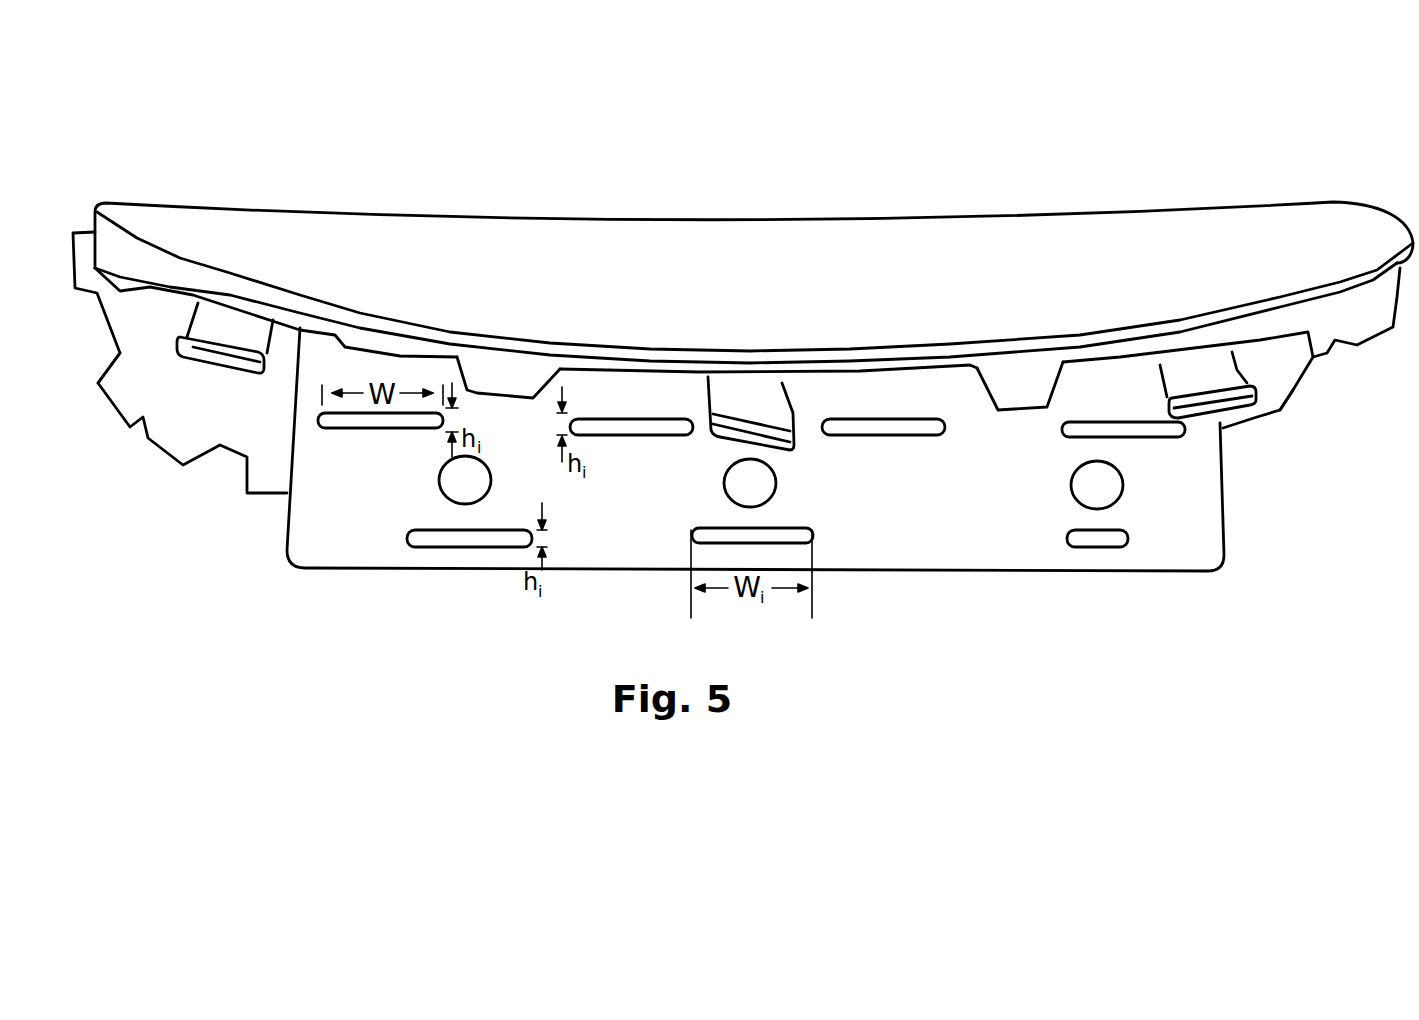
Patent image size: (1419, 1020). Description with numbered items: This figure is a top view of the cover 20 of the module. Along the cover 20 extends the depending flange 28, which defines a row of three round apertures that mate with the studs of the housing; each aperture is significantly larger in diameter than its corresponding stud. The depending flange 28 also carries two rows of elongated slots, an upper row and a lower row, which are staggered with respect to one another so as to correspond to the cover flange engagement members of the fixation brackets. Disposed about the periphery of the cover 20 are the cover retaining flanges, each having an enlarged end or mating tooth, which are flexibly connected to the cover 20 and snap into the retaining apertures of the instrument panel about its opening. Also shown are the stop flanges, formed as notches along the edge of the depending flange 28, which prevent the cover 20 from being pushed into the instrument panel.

The cover 20 is at (1205, 230).
The depending flange 28 is at (1207, 503).